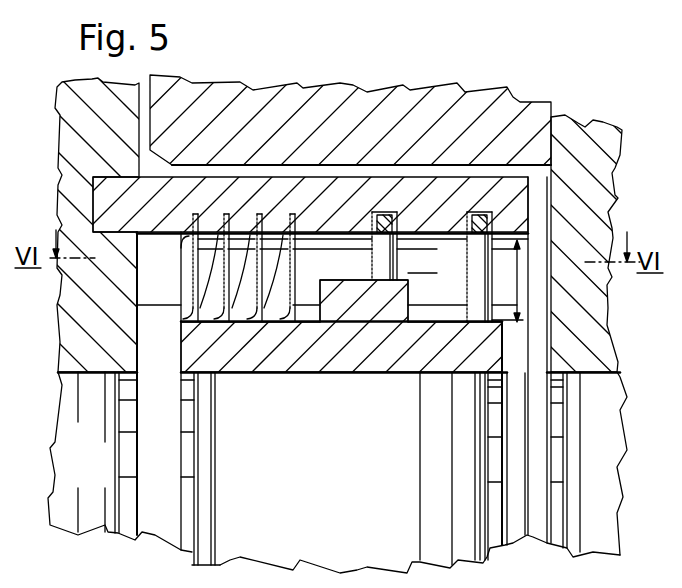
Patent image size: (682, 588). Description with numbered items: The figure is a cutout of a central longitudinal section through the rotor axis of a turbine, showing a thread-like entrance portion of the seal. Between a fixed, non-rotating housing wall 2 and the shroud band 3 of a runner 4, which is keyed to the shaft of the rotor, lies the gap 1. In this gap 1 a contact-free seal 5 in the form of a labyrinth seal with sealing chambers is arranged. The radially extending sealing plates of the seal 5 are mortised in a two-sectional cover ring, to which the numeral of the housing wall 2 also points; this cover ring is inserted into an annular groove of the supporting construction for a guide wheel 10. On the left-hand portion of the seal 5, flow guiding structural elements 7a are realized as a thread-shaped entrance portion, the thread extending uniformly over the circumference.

The gap 1 is at (513, 294).
The housing wall 2 is at (162, 237).
The shroud band 3 is at (364, 301).
The runner 4 is at (369, 478).
The contact-free seal 5 is at (372, 253).
The flow guiding structural elements 7a is at (208, 290).
The guide wheel 10 is at (96, 475).